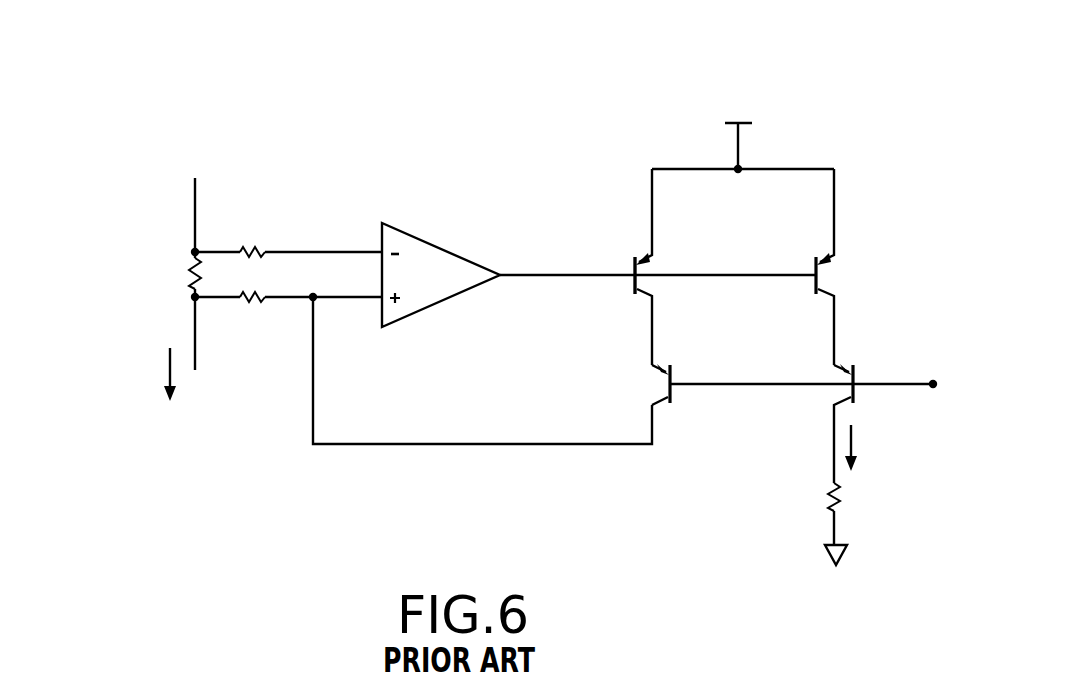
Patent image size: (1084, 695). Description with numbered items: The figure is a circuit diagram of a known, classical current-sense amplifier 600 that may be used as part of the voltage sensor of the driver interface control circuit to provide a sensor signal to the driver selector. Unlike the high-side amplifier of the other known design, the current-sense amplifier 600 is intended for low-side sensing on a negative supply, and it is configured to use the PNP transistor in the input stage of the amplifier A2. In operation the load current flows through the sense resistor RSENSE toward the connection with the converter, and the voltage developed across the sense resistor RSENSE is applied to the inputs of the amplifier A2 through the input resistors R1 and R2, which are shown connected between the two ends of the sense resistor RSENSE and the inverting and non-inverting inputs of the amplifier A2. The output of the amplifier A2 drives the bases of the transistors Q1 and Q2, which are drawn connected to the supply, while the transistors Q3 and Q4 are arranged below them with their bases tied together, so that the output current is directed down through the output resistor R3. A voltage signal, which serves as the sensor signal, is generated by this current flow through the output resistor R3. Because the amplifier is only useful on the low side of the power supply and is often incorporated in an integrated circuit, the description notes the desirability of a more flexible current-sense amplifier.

The current-sense amplifier 600 is at (135, 115).
The resistor R1 is at (288, 233).
The resistor R2 is at (288, 317).
The output resistor R3 is at (860, 524).
The sense resistor RSENSE is at (144, 274).
The amplifier A2 is at (577, 274).
The transistor Q1 is at (668, 267).
The transistor Q2 is at (853, 267).
The transistor Q3 is at (715, 389).
The transistor Q4 is at (855, 406).